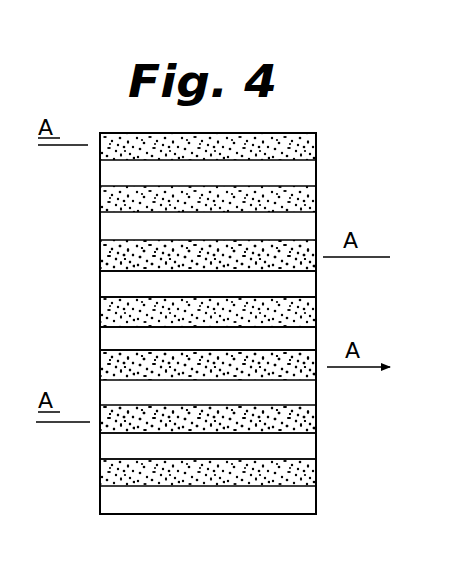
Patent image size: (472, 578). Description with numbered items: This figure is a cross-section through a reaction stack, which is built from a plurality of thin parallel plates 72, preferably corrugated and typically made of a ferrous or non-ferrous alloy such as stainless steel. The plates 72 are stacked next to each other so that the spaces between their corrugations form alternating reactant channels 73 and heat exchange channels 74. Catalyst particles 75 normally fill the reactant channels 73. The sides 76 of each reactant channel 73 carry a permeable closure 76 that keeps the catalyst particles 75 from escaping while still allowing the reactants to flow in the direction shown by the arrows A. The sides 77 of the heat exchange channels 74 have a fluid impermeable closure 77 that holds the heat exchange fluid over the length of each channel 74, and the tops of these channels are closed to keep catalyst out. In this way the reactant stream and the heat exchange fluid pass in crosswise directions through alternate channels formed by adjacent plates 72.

The plate 72 is at (113, 242).
The reactant channel 73 is at (106, 258).
The heat exchange channel 74 is at (100, 282).
The catalyst particles 75 is at (298, 422).
The permeable closure 76 is at (100, 367).
The fluid impermeable closure 77 is at (100, 297).